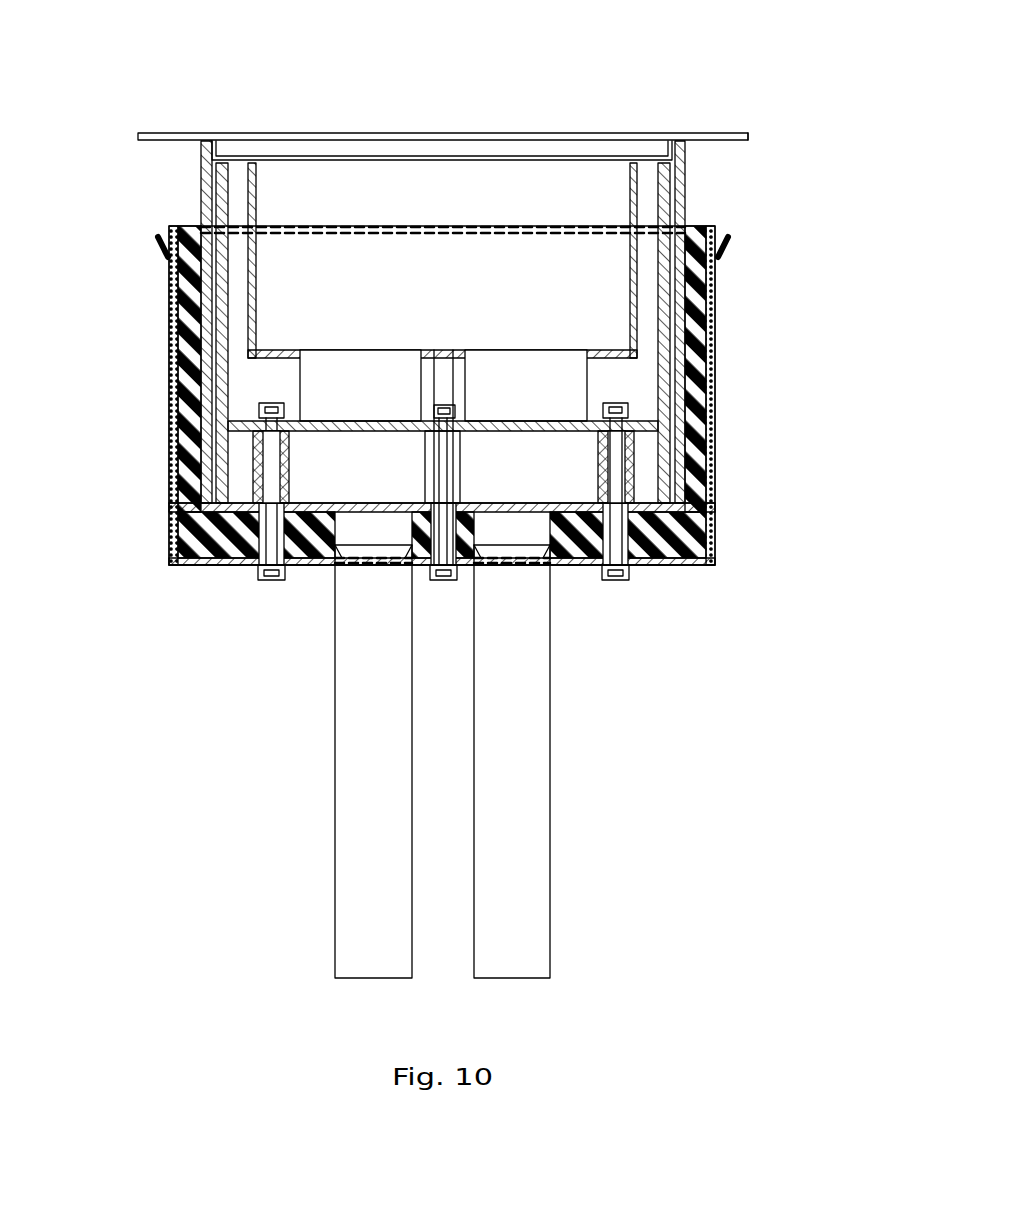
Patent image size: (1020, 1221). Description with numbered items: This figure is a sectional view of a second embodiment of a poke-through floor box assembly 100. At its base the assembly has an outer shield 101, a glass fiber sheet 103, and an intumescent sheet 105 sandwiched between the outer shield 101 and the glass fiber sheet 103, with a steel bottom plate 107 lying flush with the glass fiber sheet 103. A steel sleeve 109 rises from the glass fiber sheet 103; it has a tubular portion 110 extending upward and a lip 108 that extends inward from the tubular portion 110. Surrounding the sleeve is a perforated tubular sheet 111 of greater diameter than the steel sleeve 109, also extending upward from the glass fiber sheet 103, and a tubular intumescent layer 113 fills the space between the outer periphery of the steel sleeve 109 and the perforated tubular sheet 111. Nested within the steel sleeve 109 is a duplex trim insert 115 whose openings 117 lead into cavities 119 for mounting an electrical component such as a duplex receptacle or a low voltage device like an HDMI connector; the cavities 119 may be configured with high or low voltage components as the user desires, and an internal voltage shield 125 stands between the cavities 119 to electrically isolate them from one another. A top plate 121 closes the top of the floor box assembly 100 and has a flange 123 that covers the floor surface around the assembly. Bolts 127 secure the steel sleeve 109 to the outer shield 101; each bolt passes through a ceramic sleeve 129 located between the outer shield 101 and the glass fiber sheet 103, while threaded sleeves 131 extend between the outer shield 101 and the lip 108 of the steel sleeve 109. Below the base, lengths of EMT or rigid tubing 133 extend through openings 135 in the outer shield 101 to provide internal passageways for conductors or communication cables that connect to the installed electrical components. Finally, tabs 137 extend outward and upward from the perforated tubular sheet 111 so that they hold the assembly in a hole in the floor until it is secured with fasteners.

The poke-through floor box assembly 100 is at (105, 152).
The outer shield 101 is at (698, 563).
The glass fiber sheet 103 is at (716, 505).
The intumescent sheet 105 is at (716, 540).
The steel bottom plate 107 is at (172, 486).
The lip 108 is at (632, 418).
The steel sleeve 109 is at (692, 175).
The tubular portion 110 is at (678, 212).
The perforated tubular sheet 111 is at (714, 292).
The tubular intumescent layer 113 is at (712, 362).
The duplex trim insert 115 is at (442, 260).
The openings 117 is at (362, 350).
The cavities 119 is at (443, 385).
The top plate 121 is at (580, 133).
The flange 123 is at (750, 137).
The internal voltage shield 125 is at (445, 383).
The bolts 127 is at (267, 582).
The ceramic sleeves 129 is at (170, 538).
The threaded sleeves 131 is at (291, 470).
The EMT or rigid tubing 133 is at (442, 761).
The openings 135 is at (552, 562).
The tabs 137 is at (720, 250).